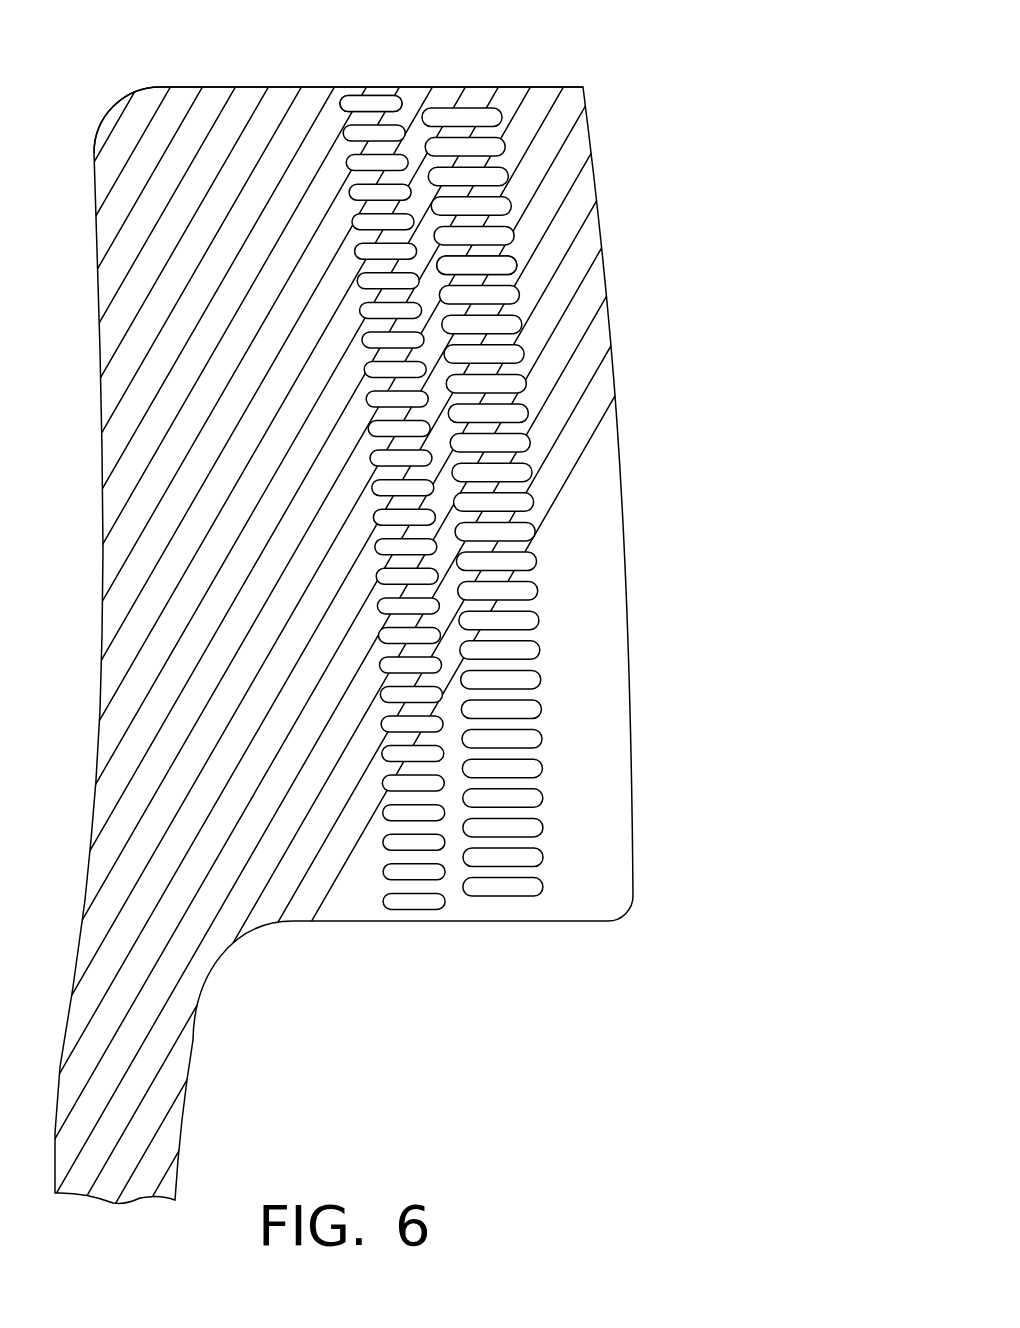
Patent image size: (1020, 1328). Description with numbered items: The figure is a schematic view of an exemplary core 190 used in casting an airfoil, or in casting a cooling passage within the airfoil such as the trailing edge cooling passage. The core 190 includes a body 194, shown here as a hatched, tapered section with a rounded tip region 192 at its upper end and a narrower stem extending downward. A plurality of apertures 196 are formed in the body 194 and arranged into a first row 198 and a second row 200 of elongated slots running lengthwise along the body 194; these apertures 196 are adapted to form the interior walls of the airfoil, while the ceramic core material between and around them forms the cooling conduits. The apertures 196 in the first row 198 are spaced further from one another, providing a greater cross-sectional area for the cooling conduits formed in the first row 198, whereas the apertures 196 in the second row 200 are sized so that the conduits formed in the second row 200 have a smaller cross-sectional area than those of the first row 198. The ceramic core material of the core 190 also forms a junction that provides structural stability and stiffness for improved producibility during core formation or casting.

The core 190 is at (548, 138).
The tip 192 is at (185, 88).
The body 194 is at (550, 357).
The apertures 196 is at (358, 95).
The first row 198 is at (411, 908).
The second row 200 is at (506, 900).